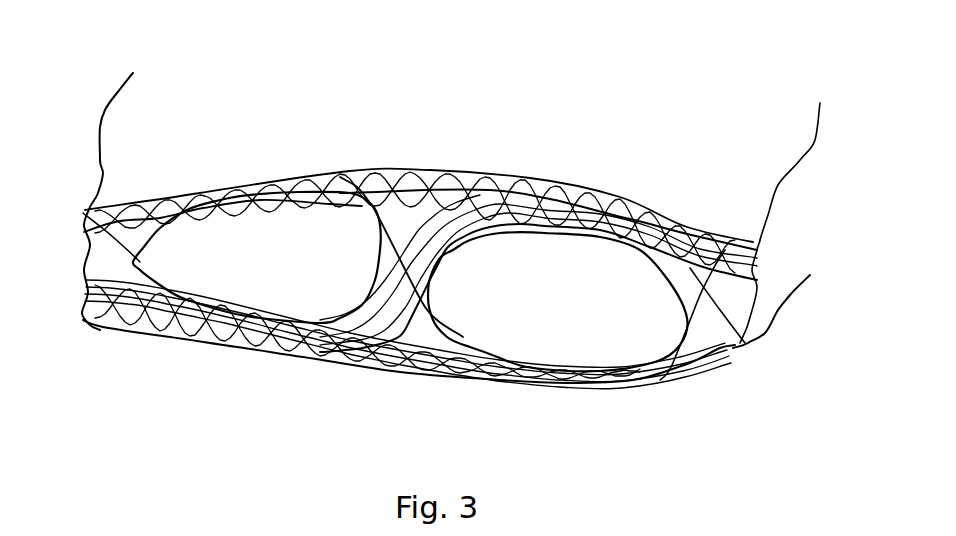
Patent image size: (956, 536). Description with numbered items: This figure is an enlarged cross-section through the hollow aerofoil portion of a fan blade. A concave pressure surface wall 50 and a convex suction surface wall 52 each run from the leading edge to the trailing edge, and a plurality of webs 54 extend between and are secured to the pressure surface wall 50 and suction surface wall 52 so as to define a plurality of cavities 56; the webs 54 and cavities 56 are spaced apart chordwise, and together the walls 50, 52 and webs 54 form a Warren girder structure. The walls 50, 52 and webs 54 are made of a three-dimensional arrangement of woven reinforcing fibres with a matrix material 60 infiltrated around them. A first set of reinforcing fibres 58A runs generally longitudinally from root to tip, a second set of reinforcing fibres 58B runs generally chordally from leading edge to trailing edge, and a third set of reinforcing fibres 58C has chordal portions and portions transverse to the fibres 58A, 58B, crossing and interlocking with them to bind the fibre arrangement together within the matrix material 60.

The concave pressure surface wall 50 is at (360, 368).
The convex suction surface wall 52 is at (523, 176).
The webs 54 is at (121, 262).
The cavities 56 is at (280, 277).
The first set of reinforcing fibres 58A is at (137, 220).
The second set of reinforcing fibres 58B is at (422, 200).
The third set of reinforcing fibres 58C is at (445, 253).
The matrix material 60 is at (392, 184).